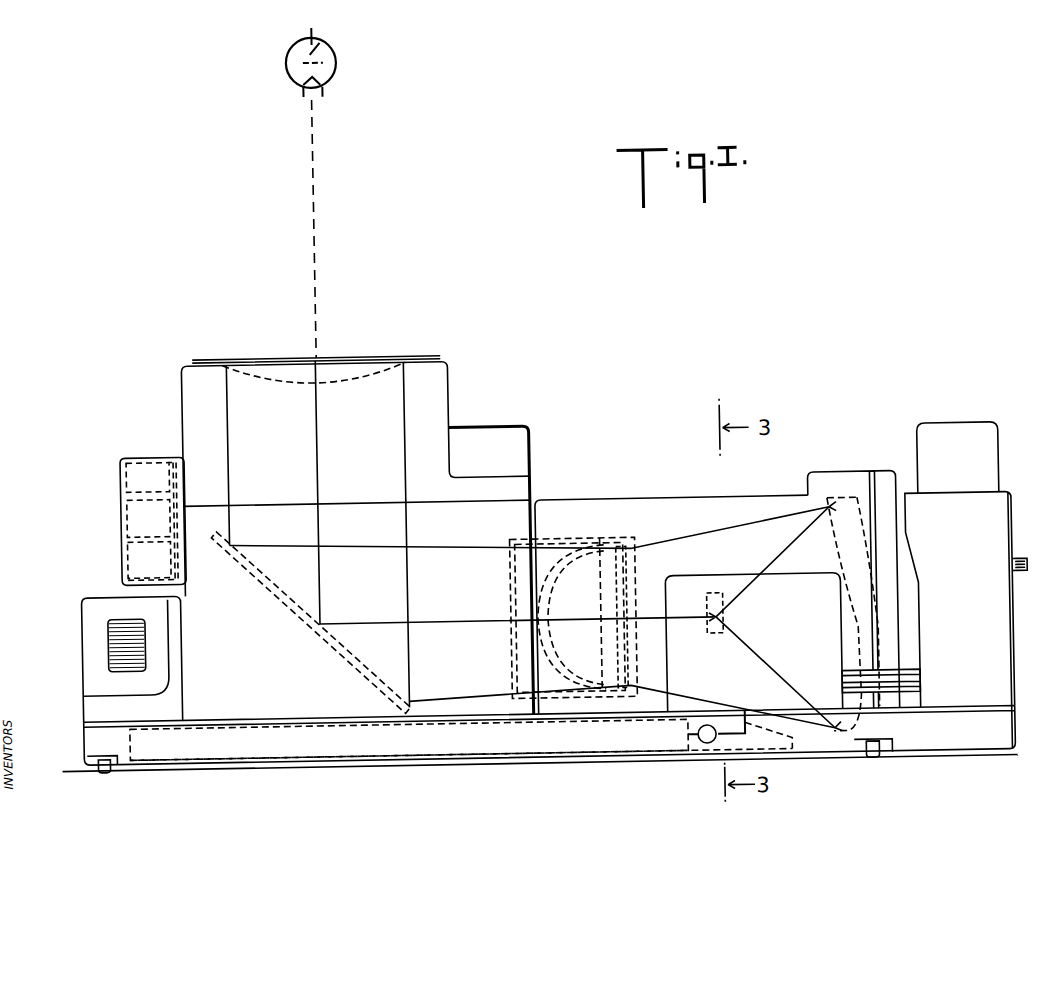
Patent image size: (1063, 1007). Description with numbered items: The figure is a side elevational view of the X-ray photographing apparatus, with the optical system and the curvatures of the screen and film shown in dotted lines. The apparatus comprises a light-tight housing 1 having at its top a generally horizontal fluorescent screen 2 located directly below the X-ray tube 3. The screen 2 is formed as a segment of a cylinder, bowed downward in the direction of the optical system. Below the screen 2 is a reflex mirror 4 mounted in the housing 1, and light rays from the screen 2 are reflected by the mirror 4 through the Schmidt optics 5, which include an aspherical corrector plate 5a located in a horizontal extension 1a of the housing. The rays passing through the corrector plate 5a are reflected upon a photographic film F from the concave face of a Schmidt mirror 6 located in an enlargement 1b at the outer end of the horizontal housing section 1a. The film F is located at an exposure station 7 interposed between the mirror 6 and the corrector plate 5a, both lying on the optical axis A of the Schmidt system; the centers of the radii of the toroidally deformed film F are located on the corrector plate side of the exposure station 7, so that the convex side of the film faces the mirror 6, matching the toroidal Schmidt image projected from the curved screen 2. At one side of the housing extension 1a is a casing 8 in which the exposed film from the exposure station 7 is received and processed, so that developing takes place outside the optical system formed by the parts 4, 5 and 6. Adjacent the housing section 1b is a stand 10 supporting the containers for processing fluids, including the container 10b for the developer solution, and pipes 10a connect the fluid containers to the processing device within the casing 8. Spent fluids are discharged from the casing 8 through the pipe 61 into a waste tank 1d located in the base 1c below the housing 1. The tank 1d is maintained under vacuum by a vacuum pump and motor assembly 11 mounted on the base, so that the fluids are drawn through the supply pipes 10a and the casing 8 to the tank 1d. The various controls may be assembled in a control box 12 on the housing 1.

The light-tight housing 1 is at (233, 689).
The horizontal extension of the housing 1a is at (649, 500).
The enlargement 1b is at (858, 486).
The base 1c is at (157, 736).
The waste tank 1d is at (298, 752).
The fluorescent screen 2 is at (345, 379).
The X-ray tube 3 is at (346, 66).
The reflex mirror 4 is at (320, 633).
The Schmidt optics 5 is at (608, 698).
The aspherical corrector plate 5a is at (601, 539).
The Schmidt mirror 6 is at (837, 503).
The exposure station 7 is at (712, 595).
The casing 8 is at (685, 685).
The pipe 61 is at (723, 741).
The stand 10 is at (998, 685).
The pipes 10a is at (887, 698).
The container for developer solution 10b is at (985, 461).
The vacuum pump and motor assembly 11 is at (97, 592).
The control box 12 is at (128, 450).
The optical axis A is at (440, 621).
The photographic film F is at (722, 603).